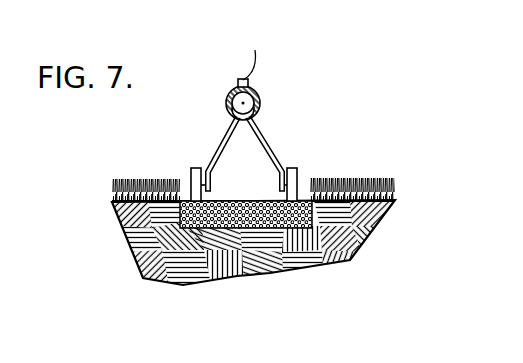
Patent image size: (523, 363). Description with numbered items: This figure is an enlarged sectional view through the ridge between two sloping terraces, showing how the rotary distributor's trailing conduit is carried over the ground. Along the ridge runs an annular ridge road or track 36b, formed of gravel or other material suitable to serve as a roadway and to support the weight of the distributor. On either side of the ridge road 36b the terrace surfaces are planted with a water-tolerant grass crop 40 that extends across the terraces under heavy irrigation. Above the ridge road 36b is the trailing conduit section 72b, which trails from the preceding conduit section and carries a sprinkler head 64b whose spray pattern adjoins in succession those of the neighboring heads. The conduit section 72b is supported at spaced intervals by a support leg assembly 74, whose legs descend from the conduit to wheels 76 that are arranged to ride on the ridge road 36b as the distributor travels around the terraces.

The sprinkler head 64b is at (279, 42).
The trailing conduit section 72b is at (262, 105).
The support leg assembly 74 is at (266, 144).
The wheel 76 is at (191, 172).
The ridge road 36b is at (265, 174).
The grass crop 40 is at (112, 191).